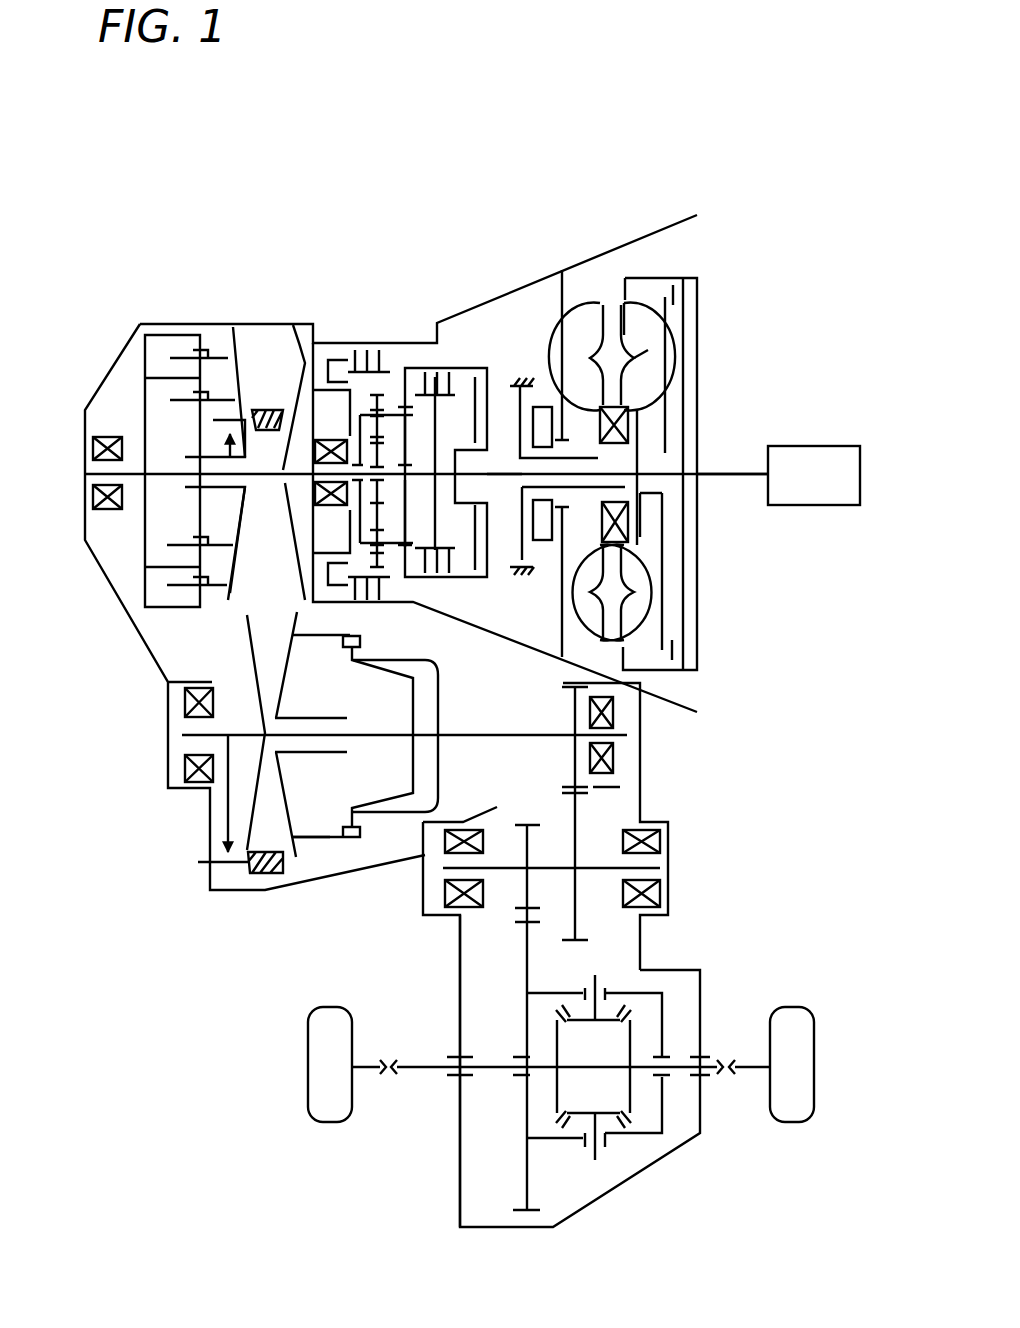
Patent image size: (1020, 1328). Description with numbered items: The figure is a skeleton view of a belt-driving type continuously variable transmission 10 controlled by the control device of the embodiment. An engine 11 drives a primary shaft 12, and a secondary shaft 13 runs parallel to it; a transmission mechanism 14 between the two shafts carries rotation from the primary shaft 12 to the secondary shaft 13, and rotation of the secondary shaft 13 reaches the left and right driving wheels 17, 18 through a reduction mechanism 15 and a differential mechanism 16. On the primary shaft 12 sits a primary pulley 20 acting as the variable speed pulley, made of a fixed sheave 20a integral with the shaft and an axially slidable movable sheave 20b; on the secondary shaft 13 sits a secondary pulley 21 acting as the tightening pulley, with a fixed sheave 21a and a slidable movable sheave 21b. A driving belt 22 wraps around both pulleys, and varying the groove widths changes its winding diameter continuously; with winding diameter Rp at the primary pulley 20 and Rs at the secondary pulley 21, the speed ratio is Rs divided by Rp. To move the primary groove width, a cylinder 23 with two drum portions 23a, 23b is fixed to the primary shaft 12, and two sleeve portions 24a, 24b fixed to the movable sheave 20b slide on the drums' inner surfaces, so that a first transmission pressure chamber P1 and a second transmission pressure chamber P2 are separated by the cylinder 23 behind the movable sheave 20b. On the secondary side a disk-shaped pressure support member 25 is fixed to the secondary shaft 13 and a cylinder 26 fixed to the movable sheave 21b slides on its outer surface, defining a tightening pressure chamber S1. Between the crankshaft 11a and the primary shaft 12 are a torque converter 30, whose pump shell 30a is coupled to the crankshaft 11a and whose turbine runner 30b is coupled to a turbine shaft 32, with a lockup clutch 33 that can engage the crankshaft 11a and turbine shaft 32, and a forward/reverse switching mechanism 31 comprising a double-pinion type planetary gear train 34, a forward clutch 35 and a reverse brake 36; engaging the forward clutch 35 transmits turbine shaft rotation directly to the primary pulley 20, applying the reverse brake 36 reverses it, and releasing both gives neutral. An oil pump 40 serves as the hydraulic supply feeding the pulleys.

The continuously variable transmission 10 is at (138, 220).
The engine 11 is at (850, 446).
The crankshaft 11a is at (738, 476).
The primary shaft 12 is at (88, 458).
The secondary shaft 13 is at (190, 735).
The transmission mechanism 14 is at (307, 324).
The reduction mechanism 15 is at (607, 809).
The differential mechanism 16 is at (630, 1149).
The driving wheel 17 is at (332, 1122).
The driving wheel 18 is at (795, 1122).
The primary pulley 20 is at (262, 402).
The fixed sheave 20a is at (293, 340).
The movable sheave 20b is at (240, 340).
The secondary pulley 21 is at (161, 734).
The fixed sheave 21a is at (248, 662).
The movable sheave 21b is at (248, 620).
The driving belt 22 is at (270, 877).
The cylinder 23 is at (138, 402).
The drum portion 23a is at (170, 372).
The drum portion 23b is at (165, 330).
The sleeve portion 24a is at (233, 533).
The sleeve portion 24b is at (225, 580).
The pressure support member 25 is at (397, 814).
The cylinder 26 is at (327, 840).
The torque converter 30 is at (675, 422).
The pump shell 30a is at (593, 302).
The turbine runner 30b is at (650, 357).
The forward/reverse switching mechanism 31 is at (442, 592).
The turbine shaft 32 is at (498, 478).
The lockup clutch 33 is at (668, 580).
The double-pinion type planetary gear train 34 is at (392, 588).
The forward clutch 35 is at (420, 360).
The reverse brake 36 is at (363, 340).
The oil pump 40 is at (542, 541).
The hydraulic fluid chamber P1 is at (150, 523).
The hydraulic fluid chamber P2 is at (155, 578).
The winding diameter Rp is at (225, 450).
The winding diameter Rs is at (218, 802).
The hydraulic fluid chamber S1 is at (402, 712).